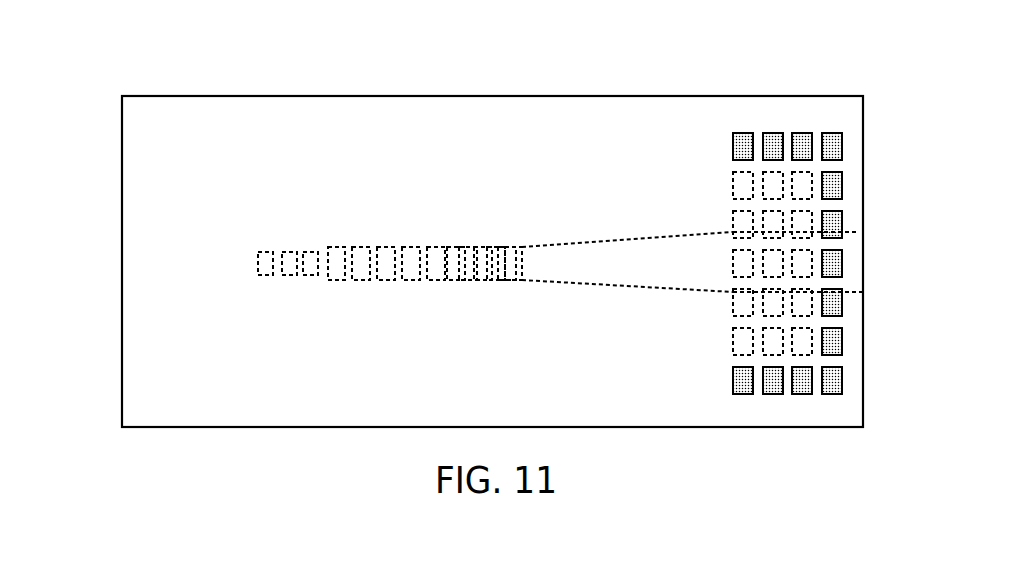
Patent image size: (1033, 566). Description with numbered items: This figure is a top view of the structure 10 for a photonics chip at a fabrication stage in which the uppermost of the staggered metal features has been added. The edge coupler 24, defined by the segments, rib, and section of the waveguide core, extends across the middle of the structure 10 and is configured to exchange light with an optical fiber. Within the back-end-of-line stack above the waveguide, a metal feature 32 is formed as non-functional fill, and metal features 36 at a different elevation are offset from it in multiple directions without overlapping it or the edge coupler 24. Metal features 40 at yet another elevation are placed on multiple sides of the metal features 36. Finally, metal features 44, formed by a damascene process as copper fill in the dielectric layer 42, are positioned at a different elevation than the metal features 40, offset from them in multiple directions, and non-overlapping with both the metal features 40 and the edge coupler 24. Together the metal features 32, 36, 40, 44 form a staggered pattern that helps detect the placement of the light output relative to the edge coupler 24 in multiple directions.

The structure 10 is at (120, 64).
The edge coupler 24 is at (710, 72).
The metal feature 32 is at (745, 271).
The metal features 36 is at (773, 222).
The metal features 40 is at (770, 341).
The dielectric layer 42 is at (160, 366).
The metal features 44 is at (808, 147).